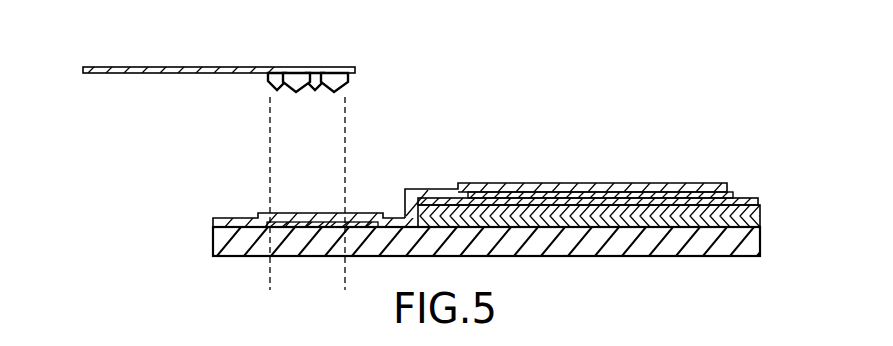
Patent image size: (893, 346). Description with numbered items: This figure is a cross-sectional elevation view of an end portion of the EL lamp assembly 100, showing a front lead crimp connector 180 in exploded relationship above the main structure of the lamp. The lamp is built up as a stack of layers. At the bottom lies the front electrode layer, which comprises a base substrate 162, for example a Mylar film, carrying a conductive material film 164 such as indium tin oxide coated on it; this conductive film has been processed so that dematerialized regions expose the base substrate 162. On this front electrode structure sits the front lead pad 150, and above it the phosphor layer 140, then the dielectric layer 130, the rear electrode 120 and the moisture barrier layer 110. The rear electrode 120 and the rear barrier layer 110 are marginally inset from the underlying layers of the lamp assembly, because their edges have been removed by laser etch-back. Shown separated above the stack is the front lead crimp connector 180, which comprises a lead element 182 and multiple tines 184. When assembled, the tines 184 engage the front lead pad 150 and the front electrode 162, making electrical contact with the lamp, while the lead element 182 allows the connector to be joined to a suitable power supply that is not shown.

The EL lamp 100 is at (556, 67).
The moisture barrier layer 110 is at (728, 184).
The rear electrode 120 is at (514, 194).
The dielectric layer 130 is at (439, 192).
The phosphor layer 140 is at (761, 222).
The front lead pad 150 is at (312, 213).
The base substrate 162 is at (762, 256).
The conductive material film 164 is at (761, 227).
The front lead crimp connector 180 is at (327, 66).
The lead element 182 is at (120, 66).
The tines 184 is at (282, 86).